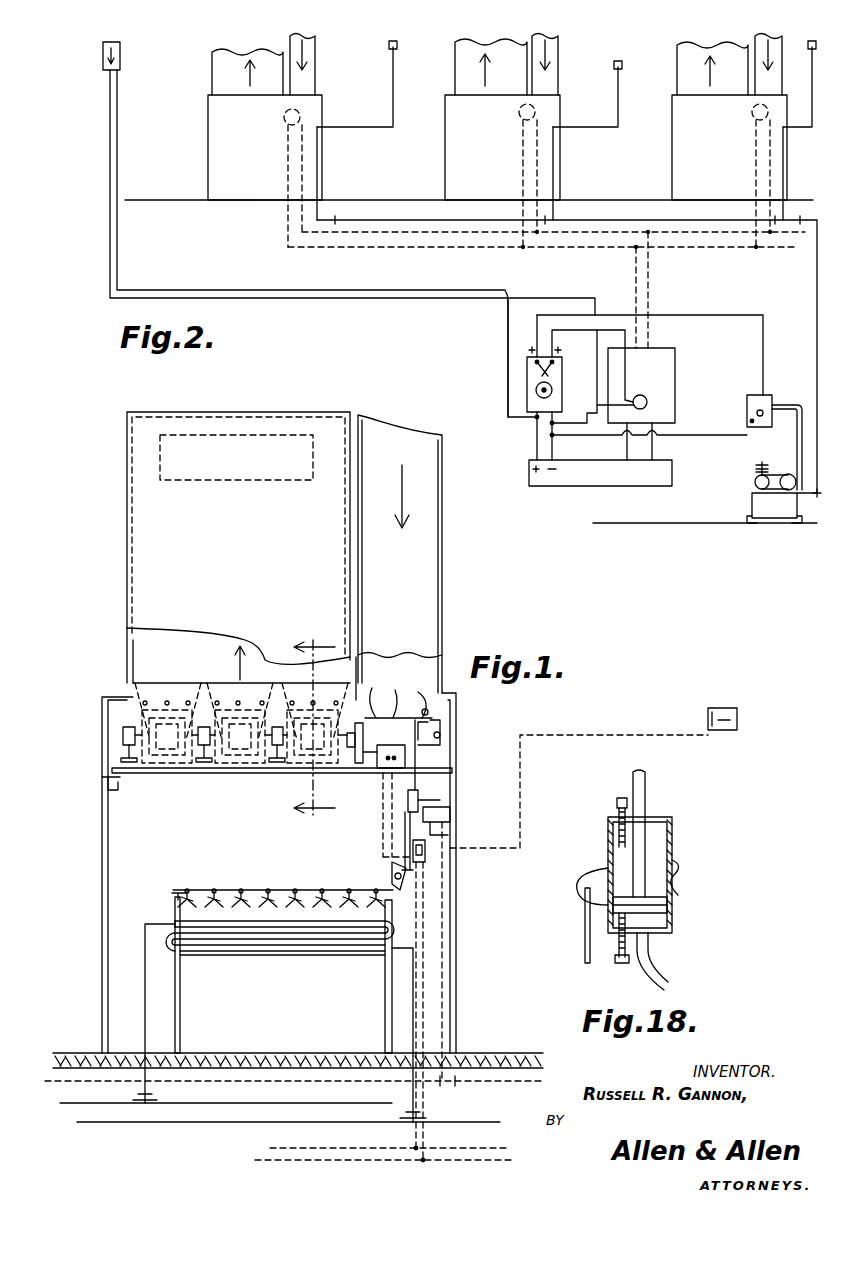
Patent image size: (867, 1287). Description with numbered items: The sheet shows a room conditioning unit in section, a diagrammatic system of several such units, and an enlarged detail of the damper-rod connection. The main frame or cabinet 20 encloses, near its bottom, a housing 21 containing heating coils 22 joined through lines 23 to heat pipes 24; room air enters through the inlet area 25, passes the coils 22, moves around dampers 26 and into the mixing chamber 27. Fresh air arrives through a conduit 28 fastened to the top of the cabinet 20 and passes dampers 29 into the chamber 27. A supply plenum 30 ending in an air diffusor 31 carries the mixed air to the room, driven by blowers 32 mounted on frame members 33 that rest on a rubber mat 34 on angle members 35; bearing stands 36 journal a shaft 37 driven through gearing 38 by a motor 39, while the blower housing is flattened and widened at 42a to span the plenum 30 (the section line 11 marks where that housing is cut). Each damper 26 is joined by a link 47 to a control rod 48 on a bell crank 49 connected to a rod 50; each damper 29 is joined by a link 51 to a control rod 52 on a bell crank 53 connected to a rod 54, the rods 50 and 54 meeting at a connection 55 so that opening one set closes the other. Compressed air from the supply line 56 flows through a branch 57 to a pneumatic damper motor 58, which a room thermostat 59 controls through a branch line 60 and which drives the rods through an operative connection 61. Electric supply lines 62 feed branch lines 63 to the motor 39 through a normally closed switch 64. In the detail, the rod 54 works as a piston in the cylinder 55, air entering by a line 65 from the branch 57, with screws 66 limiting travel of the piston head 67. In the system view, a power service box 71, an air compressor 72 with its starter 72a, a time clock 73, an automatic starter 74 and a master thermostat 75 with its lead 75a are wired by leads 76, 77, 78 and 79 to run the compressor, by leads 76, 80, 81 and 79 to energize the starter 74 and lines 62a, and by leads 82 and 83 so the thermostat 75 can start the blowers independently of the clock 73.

In FIG. 1, the section line 11 is at (301, 729).
In FIG. 2, the main frame or cabinet structure 20 is at (208, 152).
In FIG. 1, the main frame or cabinet structure 20 is at (102, 840).
In FIG. 1, the housing 21 is at (180, 999).
In FIG. 1, the heating coils 22 is at (327, 948).
In FIG. 1, the lines 23 is at (145, 1007).
In FIG. 1, the heat pipes 24 is at (246, 1124).
In FIG. 1, the inlet area 25 is at (282, 1009).
In FIG. 1, the dampers 26 is at (172, 905).
In FIG. 1, the mixing chamber 27 is at (277, 809).
In FIG. 2, the conduit 28 is at (316, 48).
In FIG. 1, the conduit 28 is at (442, 612).
In FIG. 1, the dampers 29 is at (398, 687).
In FIG. 2, the supply plenum 30 is at (266, 60).
In FIG. 1, the supply plenum 30 is at (127, 592).
In FIG. 1, the anemostat or air diffusor 31 is at (208, 480).
In FIG. 1, the blowers 32 is at (170, 765).
In FIG. 1, the frame members 33 is at (236, 765).
In FIG. 1, the rubber mat 34 is at (122, 790).
In FIG. 1, the angle members 35 is at (110, 797).
In FIG. 1, the bearing stands 36 is at (121, 750).
In FIG. 1, the shaft 37 is at (123, 735).
In FIG. 1, the gearing 38 is at (363, 735).
In FIG. 2, the motor 39 is at (284, 114).
In FIG. 1, the motor 39 is at (380, 768).
In FIG. 1, the widened housing portions 42a is at (212, 690).
In FIG. 1, the link 47 is at (178, 895).
In FIG. 1, the control rod 48 is at (226, 890).
In FIG. 1, the bell crank 49 is at (392, 866).
In FIG. 1, the rod 50 is at (405, 829).
In FIG. 18, the rod 50 is at (585, 932).
In FIG. 1, the link 51 is at (420, 694).
In FIG. 1, the control rod 52 is at (374, 689).
In FIG. 1, the bell crank 53 is at (440, 728).
In FIG. 1, the rod 54 is at (440, 744).
In FIG. 18, the rod 54 is at (645, 786).
In FIG. 1, the connection 55 is at (408, 800).
In FIG. 18, the connection 55 is at (608, 850).
In FIG. 2, the supply line 56 is at (408, 218).
In FIG. 1, the supply line 56 is at (292, 1081).
In FIG. 2, the branch line 57 is at (317, 152).
In FIG. 1, the branch line 57 is at (442, 963).
In FIG. 1, the pneumatic damper motor 58 is at (450, 808).
In FIG. 2, the room thermostat 59 is at (391, 49).
In FIG. 1, the room thermostat 59 is at (722, 708).
In FIG. 2, the branch line 60 is at (393, 96).
In FIG. 1, the branch line 60 is at (596, 735).
In FIG. 1, the operative connection 61 is at (452, 800).
In FIG. 2, the electric power supply lines 62 is at (452, 248).
In FIG. 1, the electric power supply lines 62 is at (274, 1162).
In FIG. 2, the lines 62a is at (648, 272).
In FIG. 2, the branch lines 63 is at (288, 168).
In FIG. 1, the branch lines 63 is at (423, 908).
In FIG. 1, the switch 64 is at (425, 858).
In FIG. 1, the line 65 is at (448, 834).
In FIG. 18, the line 65 is at (655, 942).
In FIG. 18, the screws 66 is at (620, 798).
In FIG. 18, the piston head 67 is at (667, 908).
In FIG. 2, the power service or connection box 71 is at (598, 486).
In FIG. 2, the air compressor 72 is at (752, 497).
In FIG. 2, the starter 72a is at (747, 395).
In FIG. 2, the time clock 73 is at (562, 386).
In FIG. 2, the automatic starter 74 is at (675, 372).
In FIG. 2, the master thermostat 75 is at (103, 60).
In FIG. 2, the lead 75a is at (527, 378).
In FIG. 2, the lead 76 is at (537, 445).
In FIG. 2, the lead 77 is at (668, 315).
In FIG. 2, the lead 78 is at (727, 435).
In FIG. 2, the lead 79 is at (552, 441).
In FIG. 2, the lead 80 is at (559, 337).
In FIG. 2, the lead 81 is at (590, 414).
In FIG. 2, the lead 82 is at (508, 330).
In FIG. 2, the lead 83 is at (465, 302).